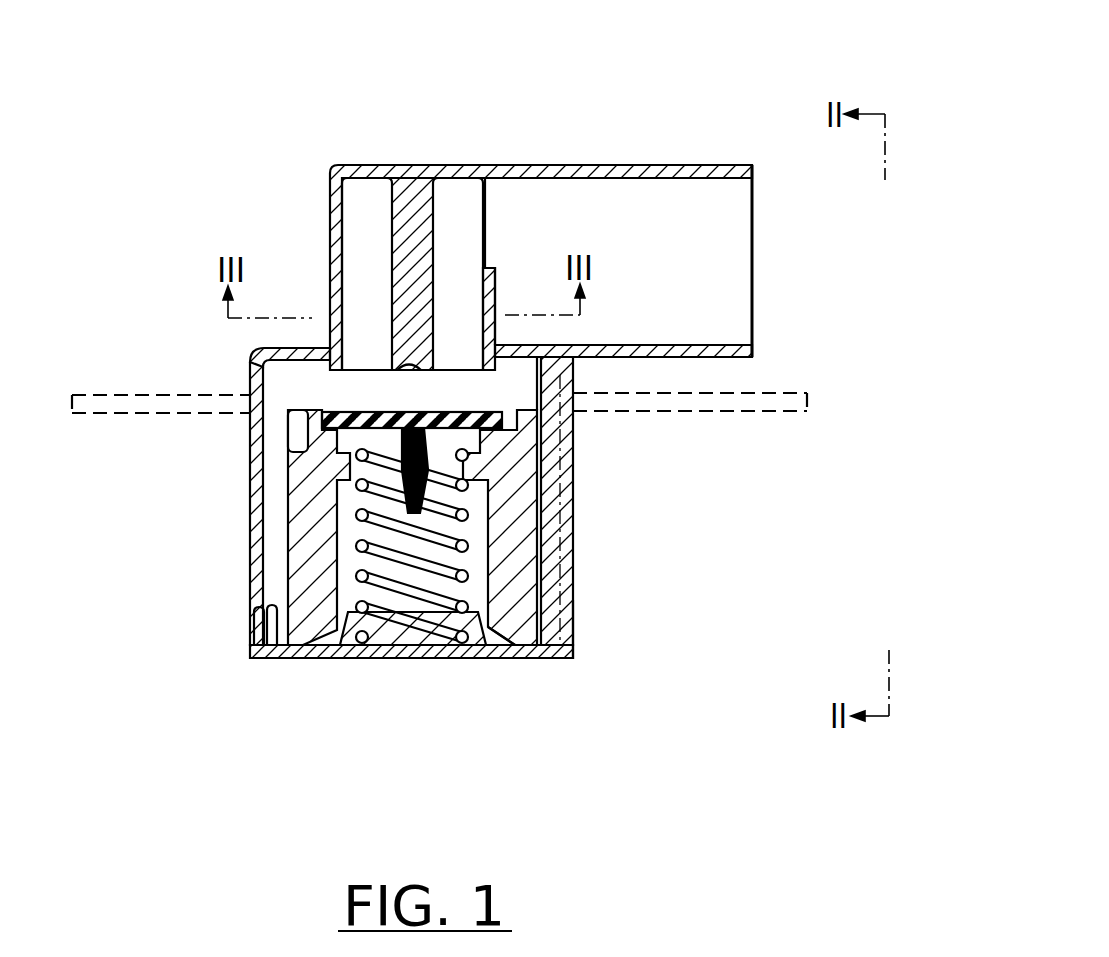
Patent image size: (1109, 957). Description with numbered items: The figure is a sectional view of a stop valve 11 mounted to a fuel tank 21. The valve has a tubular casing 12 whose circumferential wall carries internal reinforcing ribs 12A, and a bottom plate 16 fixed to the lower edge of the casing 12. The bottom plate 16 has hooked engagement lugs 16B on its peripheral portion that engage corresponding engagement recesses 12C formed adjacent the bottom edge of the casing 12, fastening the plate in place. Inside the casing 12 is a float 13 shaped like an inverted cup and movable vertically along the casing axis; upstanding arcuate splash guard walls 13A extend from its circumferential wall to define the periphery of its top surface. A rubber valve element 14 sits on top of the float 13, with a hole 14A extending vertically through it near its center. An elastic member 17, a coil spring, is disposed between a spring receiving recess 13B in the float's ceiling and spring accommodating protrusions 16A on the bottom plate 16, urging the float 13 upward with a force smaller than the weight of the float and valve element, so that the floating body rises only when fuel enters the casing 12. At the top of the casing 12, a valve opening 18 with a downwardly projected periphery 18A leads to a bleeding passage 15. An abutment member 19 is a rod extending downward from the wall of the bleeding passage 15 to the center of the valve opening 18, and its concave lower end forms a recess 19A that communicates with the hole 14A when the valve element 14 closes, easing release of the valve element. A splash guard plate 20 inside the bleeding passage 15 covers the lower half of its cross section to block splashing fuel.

The stop valve 11 is at (583, 620).
The casing 12 is at (250, 516).
The reinforcing ribs 12A is at (573, 490).
The engagement recesses 12C is at (259, 606).
The float 13 is at (510, 563).
The splash guard walls 13A is at (560, 386).
The spring receiving recess 13B is at (522, 608).
The valve element 14 is at (322, 420).
The hole 14A is at (407, 426).
The bleeding passage 15 is at (665, 165).
The bottom plate 16 is at (325, 652).
The spring accommodating protrusions 16A is at (398, 647).
The engagement lugs 16B is at (272, 632).
The elastic member 17 is at (357, 549).
The valve opening 18 is at (340, 380).
The projected periphery 18A is at (283, 362).
The abutment member 19 is at (413, 222).
The recess 19A is at (391, 340).
The splash guard plate 20 is at (497, 287).
The fuel tank 21 is at (105, 413).